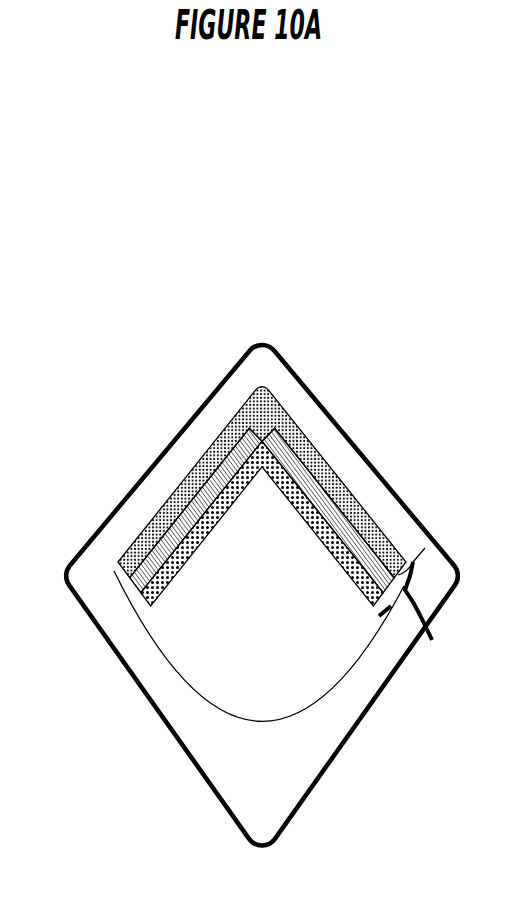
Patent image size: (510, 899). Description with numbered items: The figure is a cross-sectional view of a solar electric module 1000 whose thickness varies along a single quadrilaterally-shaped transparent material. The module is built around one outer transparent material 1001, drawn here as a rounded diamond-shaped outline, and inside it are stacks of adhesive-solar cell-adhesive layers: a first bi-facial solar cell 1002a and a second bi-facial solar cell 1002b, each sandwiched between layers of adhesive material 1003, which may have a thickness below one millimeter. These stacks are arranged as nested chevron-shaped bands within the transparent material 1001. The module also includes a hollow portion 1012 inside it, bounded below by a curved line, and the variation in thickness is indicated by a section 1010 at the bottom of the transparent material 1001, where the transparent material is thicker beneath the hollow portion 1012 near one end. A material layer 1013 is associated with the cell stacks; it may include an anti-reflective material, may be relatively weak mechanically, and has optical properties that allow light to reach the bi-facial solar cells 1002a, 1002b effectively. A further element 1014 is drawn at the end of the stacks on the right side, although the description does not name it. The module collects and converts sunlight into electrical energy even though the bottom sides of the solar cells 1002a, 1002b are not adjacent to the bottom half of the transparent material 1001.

The solar electric module 1000 is at (128, 328).
The outer transparent material 1001 is at (188, 748).
The bi-facial solar cell 1002a is at (137, 576).
The bi-facial solar cell 1002b is at (338, 500).
The adhesive material 1003 is at (121, 572).
The section 1010 is at (277, 784).
The hollow portion 1012 is at (277, 628).
The material layer 1013 is at (142, 593).
The lead connector 1014 is at (419, 614).